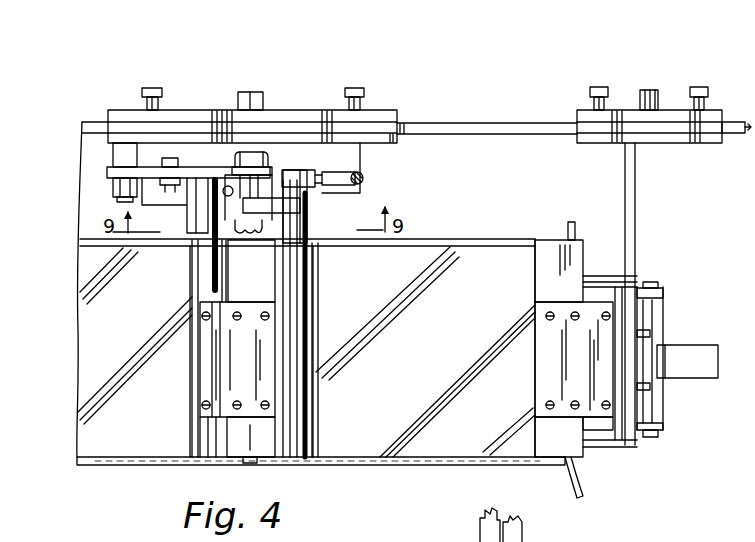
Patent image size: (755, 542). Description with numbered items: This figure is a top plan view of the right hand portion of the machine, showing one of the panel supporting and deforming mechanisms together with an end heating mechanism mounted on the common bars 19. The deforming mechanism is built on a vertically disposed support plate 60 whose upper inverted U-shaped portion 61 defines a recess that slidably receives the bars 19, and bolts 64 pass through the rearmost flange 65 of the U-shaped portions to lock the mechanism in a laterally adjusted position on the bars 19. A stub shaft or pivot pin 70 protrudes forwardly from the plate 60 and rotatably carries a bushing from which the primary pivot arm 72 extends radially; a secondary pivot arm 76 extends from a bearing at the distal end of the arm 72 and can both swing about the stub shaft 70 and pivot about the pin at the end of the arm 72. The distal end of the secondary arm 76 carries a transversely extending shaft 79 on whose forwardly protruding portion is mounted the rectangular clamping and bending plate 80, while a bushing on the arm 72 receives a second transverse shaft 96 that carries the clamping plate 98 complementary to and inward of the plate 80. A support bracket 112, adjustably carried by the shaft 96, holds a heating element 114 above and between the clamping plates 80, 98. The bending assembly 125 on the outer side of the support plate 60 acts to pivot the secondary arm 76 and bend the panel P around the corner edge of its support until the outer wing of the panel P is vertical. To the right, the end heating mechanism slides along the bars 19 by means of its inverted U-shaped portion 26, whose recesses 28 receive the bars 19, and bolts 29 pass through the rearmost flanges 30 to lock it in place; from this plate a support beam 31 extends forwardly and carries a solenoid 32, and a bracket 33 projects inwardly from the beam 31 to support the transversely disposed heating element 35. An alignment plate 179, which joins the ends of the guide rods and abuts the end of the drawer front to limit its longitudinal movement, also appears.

The bars 19 is at (536, 123).
The inverted downwardly turned U-shaped portion 26 is at (665, 106).
The recesses 28 is at (730, 120).
The bolts 29 is at (597, 87).
The rearmost flanges 30 is at (628, 116).
The support beam 31 is at (632, 213).
The solenoid 32 is at (712, 346).
The bracket 33 is at (560, 306).
The heating element 35 is at (532, 288).
The support plate 60 is at (338, 128).
The upper inverted U-shaped portion 61 is at (293, 128).
The bolts 64 is at (156, 89).
The rearmost flange 65 is at (364, 141).
The stub shaft or pivot pin 70 is at (117, 198).
The primary pivot arm 72 is at (232, 162).
The secondary pivot arm 76 is at (276, 224).
The shaft 79 is at (308, 307).
The clamping and bending plate 80 is at (316, 388).
The shaft 96 is at (200, 280).
The clamping plate 98 is at (213, 349).
The support bracket 112 is at (268, 308).
The heating element 114 is at (282, 433).
The bending assembly 125 is at (313, 192).
The alignment plate 179 is at (580, 488).
The panel P is at (453, 465).